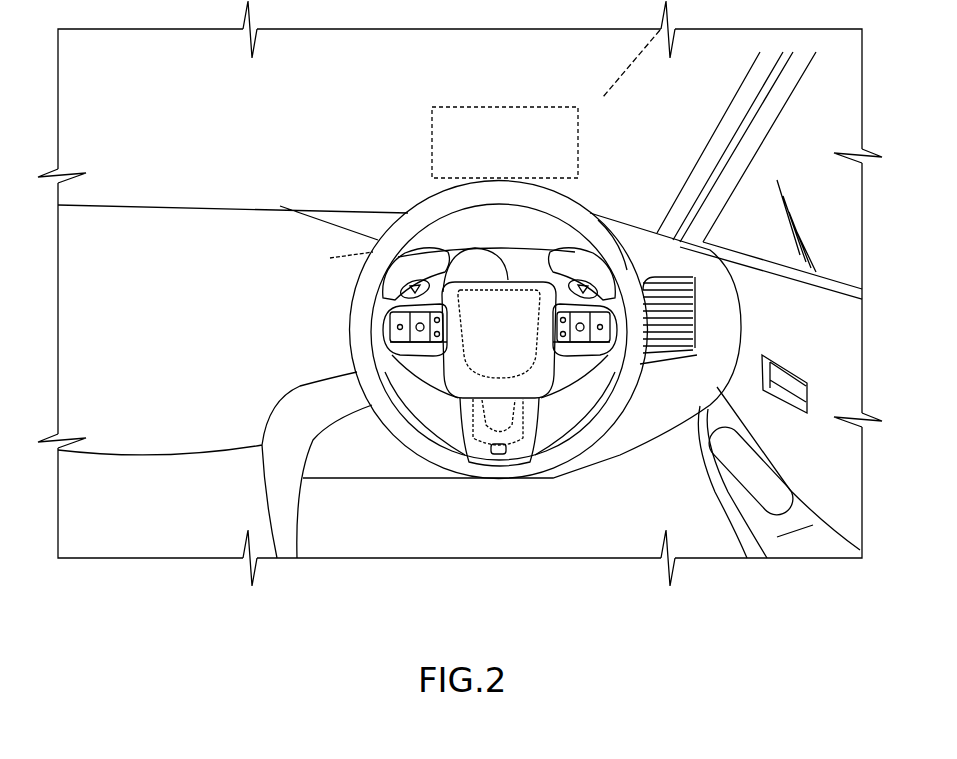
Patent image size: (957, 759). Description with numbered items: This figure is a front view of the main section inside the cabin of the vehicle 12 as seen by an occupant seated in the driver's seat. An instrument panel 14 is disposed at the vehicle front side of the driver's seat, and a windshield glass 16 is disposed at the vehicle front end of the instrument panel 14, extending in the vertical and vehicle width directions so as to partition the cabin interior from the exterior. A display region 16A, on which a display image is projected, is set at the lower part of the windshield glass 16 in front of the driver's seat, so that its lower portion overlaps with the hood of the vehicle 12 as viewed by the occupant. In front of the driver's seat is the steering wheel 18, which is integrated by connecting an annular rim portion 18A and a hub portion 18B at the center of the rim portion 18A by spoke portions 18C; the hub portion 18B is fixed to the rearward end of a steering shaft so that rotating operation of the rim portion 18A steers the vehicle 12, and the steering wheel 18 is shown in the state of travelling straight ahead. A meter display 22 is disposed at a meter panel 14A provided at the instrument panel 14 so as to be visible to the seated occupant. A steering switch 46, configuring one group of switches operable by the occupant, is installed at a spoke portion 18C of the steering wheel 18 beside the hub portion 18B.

The vehicle 12 is at (805, 328).
The instrument panel 14 is at (264, 222).
The meter panel 14A is at (568, 257).
The windshield glass 16 is at (193, 176).
The display region 16A is at (488, 107).
The steering wheel 18 is at (460, 325).
The rim portion 18A is at (428, 206).
The hub portion 18B is at (473, 358).
The spoke portions 18C is at (385, 352).
The meter display 22 is at (478, 256).
The steering switch 46 is at (565, 297).